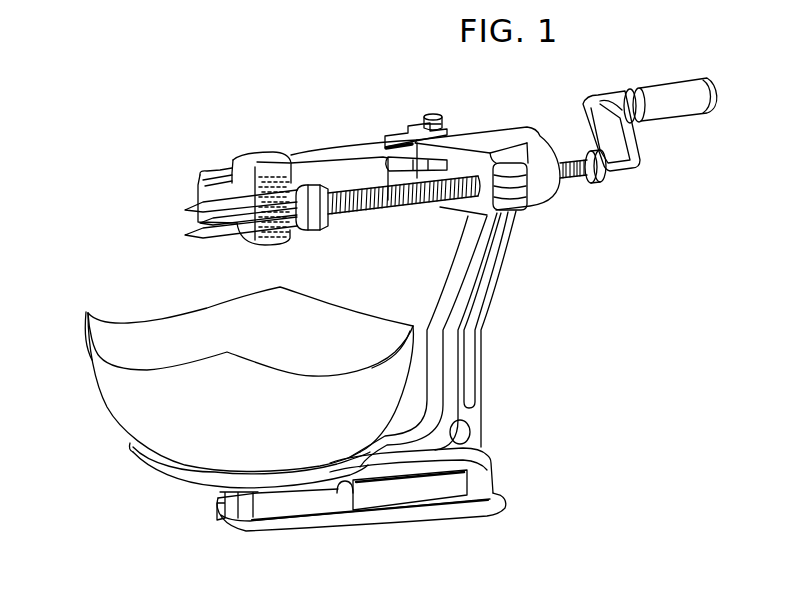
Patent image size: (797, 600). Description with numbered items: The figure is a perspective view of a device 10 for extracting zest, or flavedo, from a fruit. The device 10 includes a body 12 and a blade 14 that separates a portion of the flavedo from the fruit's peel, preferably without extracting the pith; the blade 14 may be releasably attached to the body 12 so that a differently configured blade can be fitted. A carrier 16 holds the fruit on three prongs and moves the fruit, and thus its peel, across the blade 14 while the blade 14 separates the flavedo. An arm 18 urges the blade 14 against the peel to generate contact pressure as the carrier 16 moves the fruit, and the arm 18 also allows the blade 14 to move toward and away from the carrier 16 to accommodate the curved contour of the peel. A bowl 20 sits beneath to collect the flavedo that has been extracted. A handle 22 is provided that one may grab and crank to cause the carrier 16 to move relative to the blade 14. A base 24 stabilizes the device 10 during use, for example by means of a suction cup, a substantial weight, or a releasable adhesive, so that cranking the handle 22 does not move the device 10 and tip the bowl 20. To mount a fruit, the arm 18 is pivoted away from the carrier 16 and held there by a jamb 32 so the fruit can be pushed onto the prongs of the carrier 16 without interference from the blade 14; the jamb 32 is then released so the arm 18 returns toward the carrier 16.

The device 10 is at (266, 86).
The body 12 is at (483, 137).
The blade 14 is at (236, 160).
The carrier 16 is at (388, 214).
The arm 18 is at (346, 146).
The bowl 20 is at (101, 395).
The handle 22 is at (711, 78).
The base 24 is at (298, 534).
The jamb 32 is at (401, 131).